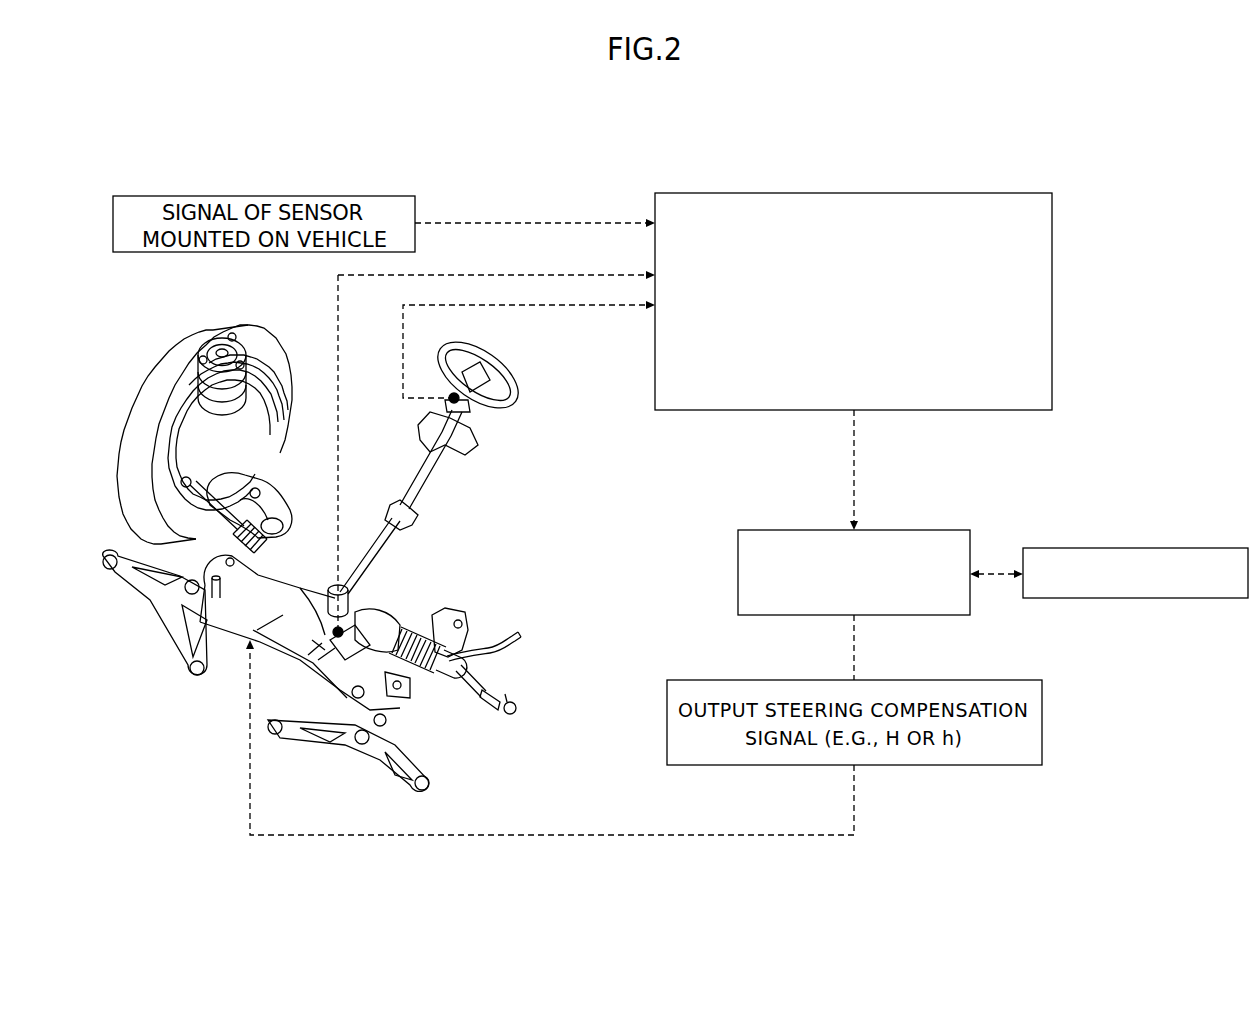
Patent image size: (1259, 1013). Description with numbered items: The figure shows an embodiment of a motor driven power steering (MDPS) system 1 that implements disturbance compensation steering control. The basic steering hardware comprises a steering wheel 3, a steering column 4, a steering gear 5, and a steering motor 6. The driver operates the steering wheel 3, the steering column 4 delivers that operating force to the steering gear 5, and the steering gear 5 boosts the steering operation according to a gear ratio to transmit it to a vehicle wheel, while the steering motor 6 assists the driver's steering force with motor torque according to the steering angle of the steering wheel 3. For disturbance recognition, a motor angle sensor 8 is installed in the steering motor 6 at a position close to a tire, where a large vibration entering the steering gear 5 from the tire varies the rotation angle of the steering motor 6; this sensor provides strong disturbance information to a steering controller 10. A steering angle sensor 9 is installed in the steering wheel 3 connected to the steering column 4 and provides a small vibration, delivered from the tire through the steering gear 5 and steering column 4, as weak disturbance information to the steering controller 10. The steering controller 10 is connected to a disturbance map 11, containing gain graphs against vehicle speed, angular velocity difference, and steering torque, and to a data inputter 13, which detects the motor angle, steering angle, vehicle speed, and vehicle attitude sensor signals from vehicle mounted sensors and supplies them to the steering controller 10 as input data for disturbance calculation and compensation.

The motor driven power steering (MDPS) system 1 is at (305, 172).
The steering wheel 3 is at (512, 380).
The steering column 4 is at (422, 483).
The steering gear 5 is at (397, 627).
The steering motor 6 is at (413, 692).
The motor angle sensor 8 is at (330, 655).
The steering angle sensor 9 is at (470, 406).
The steering controller 10 is at (901, 530).
The disturbance map 11 is at (1088, 548).
The data inputter 13 is at (851, 193).